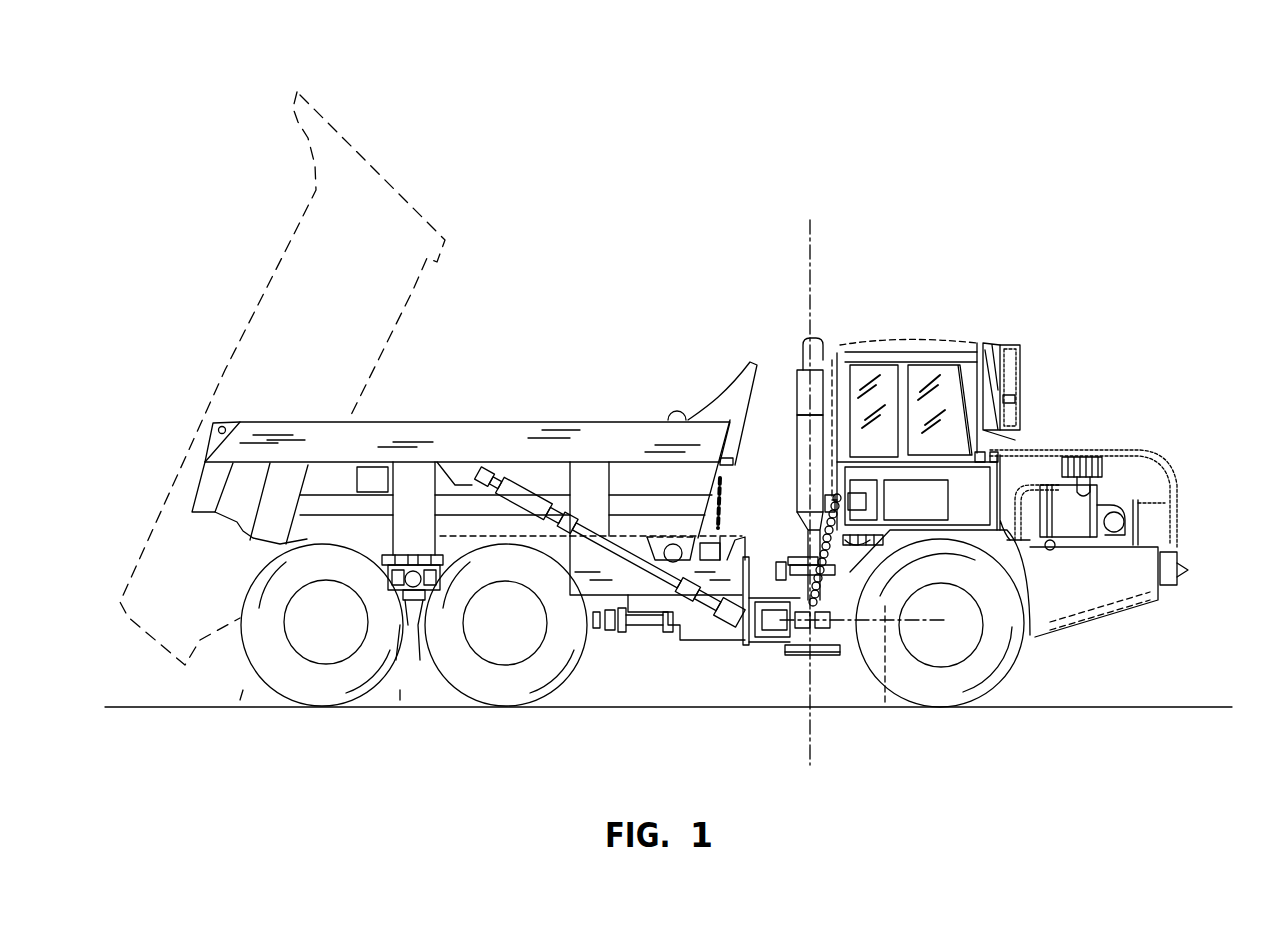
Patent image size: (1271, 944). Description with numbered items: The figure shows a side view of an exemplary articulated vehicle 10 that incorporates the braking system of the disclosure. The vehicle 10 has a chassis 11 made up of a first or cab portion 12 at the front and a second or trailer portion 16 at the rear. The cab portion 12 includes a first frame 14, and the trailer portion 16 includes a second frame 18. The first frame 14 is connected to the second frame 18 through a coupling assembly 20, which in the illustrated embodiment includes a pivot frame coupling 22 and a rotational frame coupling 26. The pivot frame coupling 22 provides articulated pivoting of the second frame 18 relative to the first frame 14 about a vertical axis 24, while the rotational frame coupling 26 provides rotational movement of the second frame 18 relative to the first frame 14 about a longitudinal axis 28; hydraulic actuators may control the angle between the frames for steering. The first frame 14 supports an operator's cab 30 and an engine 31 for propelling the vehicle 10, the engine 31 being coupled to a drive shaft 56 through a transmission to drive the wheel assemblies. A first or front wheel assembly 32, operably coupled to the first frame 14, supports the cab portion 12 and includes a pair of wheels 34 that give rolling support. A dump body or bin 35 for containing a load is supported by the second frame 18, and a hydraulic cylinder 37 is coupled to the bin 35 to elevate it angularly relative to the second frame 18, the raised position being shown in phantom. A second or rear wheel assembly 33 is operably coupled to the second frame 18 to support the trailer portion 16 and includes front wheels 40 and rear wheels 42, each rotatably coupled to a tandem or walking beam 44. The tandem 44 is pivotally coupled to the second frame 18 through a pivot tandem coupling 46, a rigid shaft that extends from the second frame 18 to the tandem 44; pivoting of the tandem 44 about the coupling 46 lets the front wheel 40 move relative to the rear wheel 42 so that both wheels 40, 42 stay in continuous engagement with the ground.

The articulated vehicle 10 is at (1110, 150).
The chassis 11 is at (1126, 733).
The cab portion 12 is at (997, 272).
The first frame 14 is at (1082, 627).
The trailer portion 16 is at (572, 218).
The second frame 18 is at (622, 580).
The coupling assembly 20 is at (735, 664).
The pivot frame coupling 22 is at (822, 645).
The vertical axis 24 is at (805, 257).
The rotational frame coupling 26 is at (790, 632).
The longitudinal axis 28 is at (887, 703).
The operator's cab 30 is at (908, 335).
The engine 31 is at (1052, 485).
The front wheel assembly 32 is at (1008, 688).
The rear wheel assembly 33 is at (417, 710).
The wheels 34 is at (948, 692).
The dump body 35 is at (413, 290).
The hydraulic cylinder 37 is at (530, 495).
The front wheels 40 is at (507, 690).
The rear wheels 42 is at (305, 685).
The tandem 44 is at (418, 625).
The pivot tandem coupling 46 is at (413, 570).
The drive shaft 56 is at (650, 626).